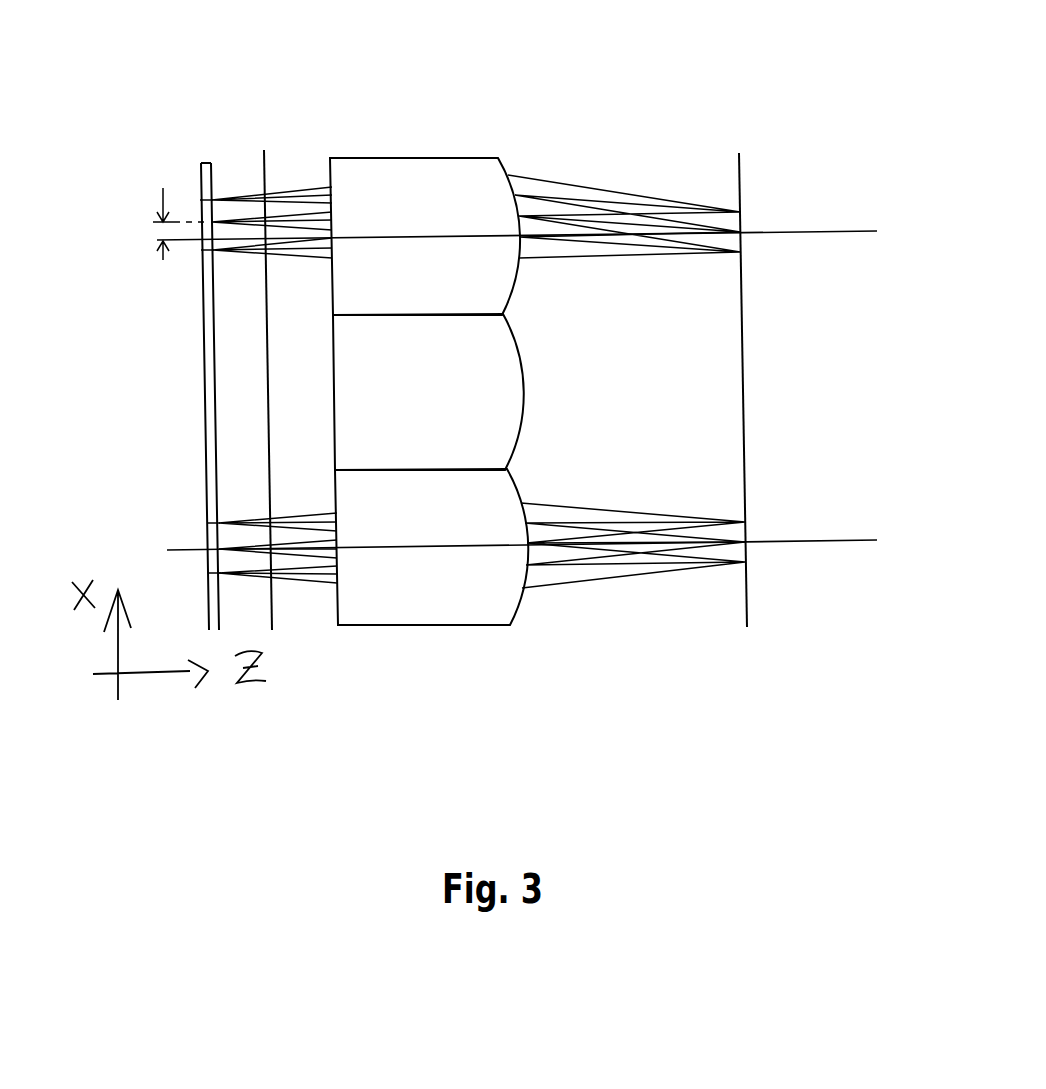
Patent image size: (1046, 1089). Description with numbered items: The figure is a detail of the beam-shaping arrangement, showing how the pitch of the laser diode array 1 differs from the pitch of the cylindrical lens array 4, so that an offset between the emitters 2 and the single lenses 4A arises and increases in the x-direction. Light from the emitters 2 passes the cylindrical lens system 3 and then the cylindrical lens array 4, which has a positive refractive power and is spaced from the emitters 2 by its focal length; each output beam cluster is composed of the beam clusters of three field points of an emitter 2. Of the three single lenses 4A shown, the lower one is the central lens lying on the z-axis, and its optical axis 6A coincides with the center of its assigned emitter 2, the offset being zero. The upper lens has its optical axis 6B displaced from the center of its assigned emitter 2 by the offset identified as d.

The laser diode array 1 is at (203, 155).
The emitter 2 is at (204, 535).
The cylindrical lens system 3 is at (262, 153).
The cylindrical lens array 4 is at (483, 321).
The single lens 4A is at (468, 380).
The optical axis 6A is at (548, 550).
The optical axis 6B is at (543, 240).
The offset d is at (178, 208).